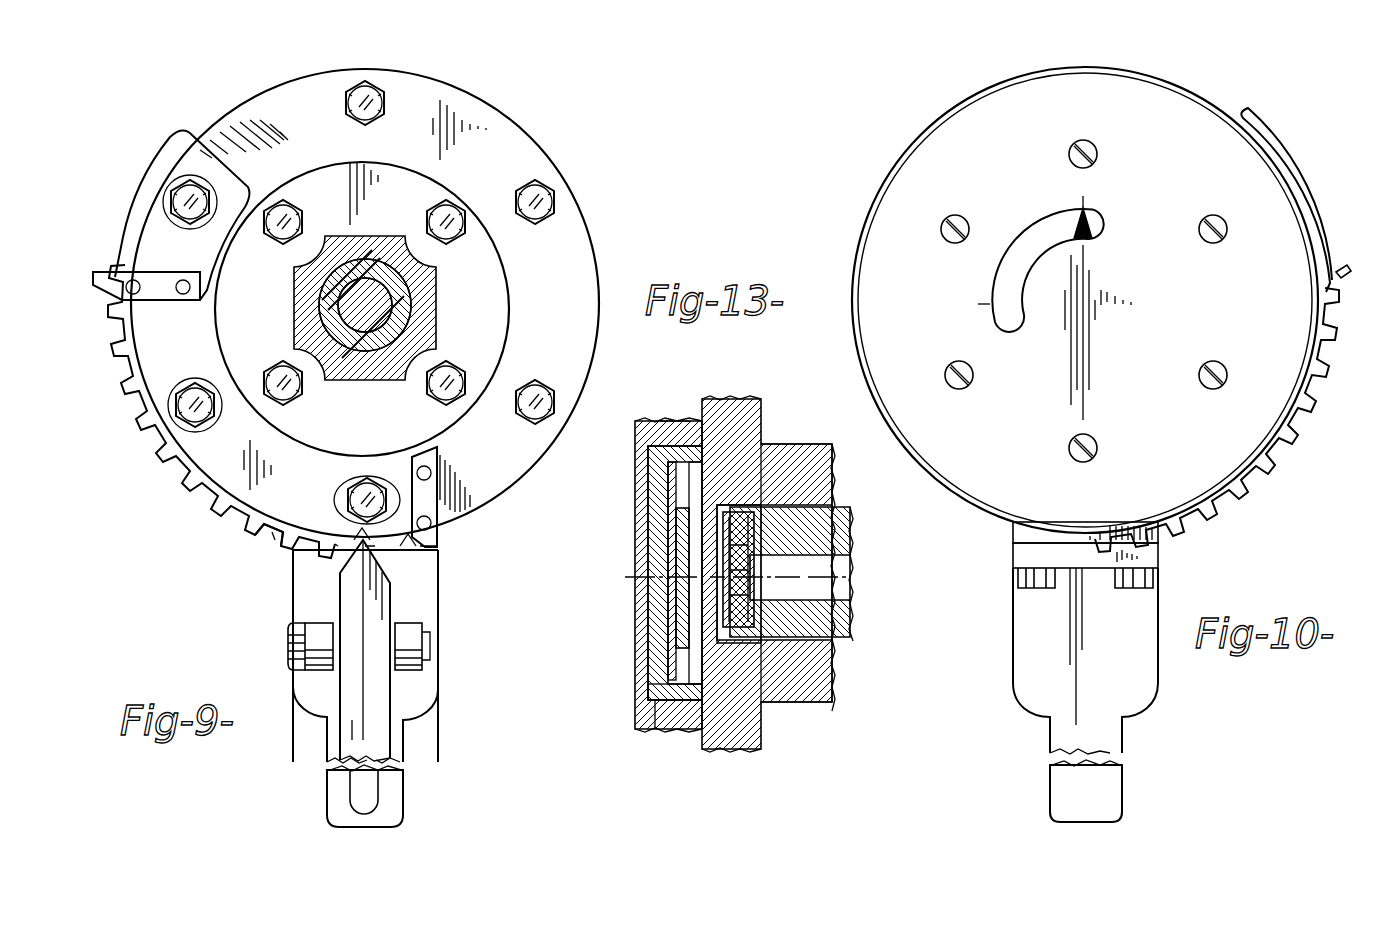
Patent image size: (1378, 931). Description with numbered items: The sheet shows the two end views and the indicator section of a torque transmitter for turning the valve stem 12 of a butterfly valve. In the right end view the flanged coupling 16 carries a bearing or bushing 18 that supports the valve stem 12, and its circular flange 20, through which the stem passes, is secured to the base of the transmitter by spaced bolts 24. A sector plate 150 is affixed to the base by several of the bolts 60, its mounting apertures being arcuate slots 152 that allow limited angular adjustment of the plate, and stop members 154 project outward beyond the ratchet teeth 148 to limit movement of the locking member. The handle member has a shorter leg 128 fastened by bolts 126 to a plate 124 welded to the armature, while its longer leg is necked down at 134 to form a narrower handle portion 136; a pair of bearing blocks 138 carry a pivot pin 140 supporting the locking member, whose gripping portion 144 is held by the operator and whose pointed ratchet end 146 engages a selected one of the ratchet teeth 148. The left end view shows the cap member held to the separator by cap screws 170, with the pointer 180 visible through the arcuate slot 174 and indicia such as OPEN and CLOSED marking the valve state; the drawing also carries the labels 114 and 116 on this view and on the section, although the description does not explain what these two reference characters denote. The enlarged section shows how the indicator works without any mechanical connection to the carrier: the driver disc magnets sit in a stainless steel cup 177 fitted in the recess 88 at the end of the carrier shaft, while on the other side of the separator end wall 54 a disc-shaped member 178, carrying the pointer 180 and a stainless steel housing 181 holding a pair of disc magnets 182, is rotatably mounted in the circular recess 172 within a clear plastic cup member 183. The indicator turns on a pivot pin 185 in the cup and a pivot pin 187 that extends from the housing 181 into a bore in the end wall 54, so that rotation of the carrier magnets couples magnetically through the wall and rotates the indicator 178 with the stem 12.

In FIG. 9, the valve stem 12 is at (385, 318).
In FIG. 9, the flanged coupling 16 is at (386, 232).
In FIG. 9, the bearing or bushing 18 is at (372, 340).
In FIG. 9, the circular flange 20 is at (510, 308).
In FIG. 9, the spaced bolts 24 is at (292, 392).
In FIG. 13, the end wall 54 is at (712, 580).
In FIG. 9, the bolts 60 is at (348, 488).
In FIG. 13, the recess 88 is at (772, 632).
In FIG. 10, the indicator slot 114 is at (1020, 300).
In FIG. 13, the hub 116 is at (756, 566).
In FIG. 10, the plate 124 is at (1030, 533).
In FIG. 10, the bolts 126 is at (1132, 582).
In FIG. 10, the shorter leg 128 is at (1150, 556).
In FIG. 9, the necked-down portion 134 is at (432, 702).
In FIG. 10, the necked-down portion 134 is at (1140, 698).
In FIG. 9, the handle portion 136 is at (392, 800).
In FIG. 10, the handle portion 136 is at (1110, 782).
In FIG. 9, the bearing blocks 138 is at (412, 632).
In FIG. 9, the pivot pin 140 is at (290, 648).
In FIG. 9, the gripping portion 144 is at (372, 740).
In FIG. 9, the pointed ratchet end 146 is at (428, 592).
In FIG. 9, the ratchet teeth 148 is at (276, 548).
In FIG. 10, the ratchet teeth 148 is at (1268, 458).
In FIG. 9, the sector plate 150 is at (222, 514).
In FIG. 10, the sector plate 150 is at (1278, 145).
In FIG. 9, the arcuate slots 152 is at (205, 428).
In FIG. 9, the stop members 154 is at (432, 500).
In FIG. 10, the stop members 154 is at (1346, 265).
In FIG. 10, the cap screws 170 is at (1222, 240).
In FIG. 13, the circular recess 172 is at (655, 692).
In FIG. 13, the arcuate slot 174 is at (637, 483).
In FIG. 13, the stainless steel cup 177 is at (770, 525).
In FIG. 13, the disc-shaped member 178 is at (660, 514).
In FIG. 13, the pointer 180 is at (668, 421).
In FIG. 10, the pointer 180 is at (1098, 225).
In FIG. 13, the stainless steel housing 181 is at (660, 705).
In FIG. 13, the disc magnets 182 is at (695, 650).
In FIG. 13, the clear plastic cup member 183 is at (682, 640).
In FIG. 13, the pivot pin 185 is at (672, 580).
In FIG. 13, the pivot pin 187 is at (765, 445).